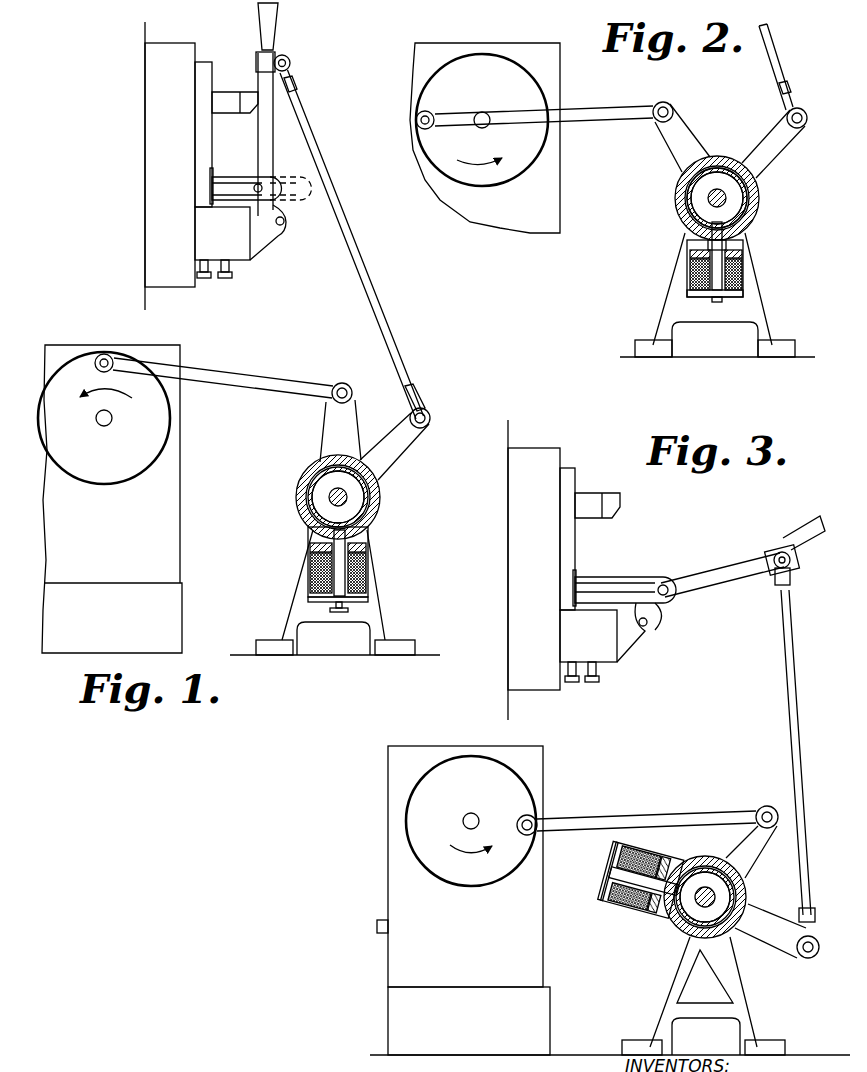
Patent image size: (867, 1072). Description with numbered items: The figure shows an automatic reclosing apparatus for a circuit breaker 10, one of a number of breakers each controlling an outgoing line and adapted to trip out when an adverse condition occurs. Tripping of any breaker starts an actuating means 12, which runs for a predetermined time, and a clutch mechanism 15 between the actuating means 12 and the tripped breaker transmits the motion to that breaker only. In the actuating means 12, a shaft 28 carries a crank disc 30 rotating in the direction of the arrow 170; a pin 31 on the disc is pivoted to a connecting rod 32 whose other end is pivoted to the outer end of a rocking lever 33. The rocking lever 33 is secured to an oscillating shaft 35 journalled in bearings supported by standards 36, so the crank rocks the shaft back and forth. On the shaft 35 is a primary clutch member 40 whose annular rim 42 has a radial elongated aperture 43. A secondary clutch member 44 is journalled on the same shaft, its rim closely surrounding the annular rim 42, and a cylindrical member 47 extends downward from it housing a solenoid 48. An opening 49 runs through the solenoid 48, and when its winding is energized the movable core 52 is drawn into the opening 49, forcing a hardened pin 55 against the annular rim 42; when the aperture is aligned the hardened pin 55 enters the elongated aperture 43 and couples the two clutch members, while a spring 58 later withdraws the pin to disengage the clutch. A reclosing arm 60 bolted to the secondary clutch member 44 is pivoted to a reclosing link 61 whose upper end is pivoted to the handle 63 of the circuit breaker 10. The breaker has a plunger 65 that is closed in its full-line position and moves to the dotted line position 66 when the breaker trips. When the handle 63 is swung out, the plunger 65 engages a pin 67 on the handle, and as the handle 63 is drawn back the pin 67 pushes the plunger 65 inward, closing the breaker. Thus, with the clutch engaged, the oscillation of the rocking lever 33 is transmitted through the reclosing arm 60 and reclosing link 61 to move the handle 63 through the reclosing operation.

In FIG. 1, the circuit breaker 10 is at (177, 273).
In FIG. 3, the circuit breaker 10 is at (549, 674).
In FIG. 1, the actuating means 12 is at (153, 512).
In FIG. 2, the actuating means 12 is at (538, 190).
In FIG. 3, the actuating means 12 is at (521, 948).
In FIG. 1, the clutch mechanism 15 is at (386, 492).
In FIG. 3, the clutch mechanism 15 is at (686, 851).
In FIG. 1, the shaft 28 is at (103, 428).
In FIG. 2, the shaft 28 is at (487, 126).
In FIG. 3, the shaft 28 is at (471, 812).
In FIG. 1, the crank disc 30 is at (108, 478).
In FIG. 2, the crank disc 30 is at (535, 88).
In FIG. 3, the crank disc 30 is at (456, 875).
In FIG. 1, the pin 31 is at (113, 356).
In FIG. 2, the pin 31 is at (415, 120).
In FIG. 3, the pin 31 is at (537, 816).
In FIG. 1, the connecting rod 32 is at (277, 382).
In FIG. 2, the connecting rod 32 is at (609, 108).
In FIG. 3, the connecting rod 32 is at (682, 814).
In FIG. 1, the rocking lever 33 is at (352, 415).
In FIG. 2, the rocking lever 33 is at (685, 128).
In FIG. 3, the rocking lever 33 is at (735, 838).
In FIG. 1, the oscillating shaft 35 is at (350, 501).
In FIG. 2, the oscillating shaft 35 is at (727, 200).
In FIG. 3, the oscillating shaft 35 is at (707, 910).
In FIG. 1, the standard 36 is at (378, 618).
In FIG. 2, the standard 36 is at (717, 295).
In FIG. 3, the standard 36 is at (752, 1024).
In FIG. 1, the primary clutch member 40 is at (318, 493).
In FIG. 2, the primary clutch member 40 is at (735, 194).
In FIG. 3, the primary clutch member 40 is at (722, 895).
In FIG. 2, the annular rim 42 is at (688, 197).
In FIG. 1, the elongated aperture 43 is at (322, 516).
In FIG. 2, the elongated aperture 43 is at (700, 224).
In FIG. 3, the elongated aperture 43 is at (660, 886).
In FIG. 1, the secondary clutch member 44 is at (299, 477).
In FIG. 2, the secondary clutch member 44 is at (675, 183).
In FIG. 3, the secondary clutch member 44 is at (675, 866).
In FIG. 1, the cylindrical member 47 is at (375, 568).
In FIG. 2, the cylindrical member 47 is at (736, 292).
In FIG. 1, the solenoid 48 is at (370, 580).
In FIG. 2, the solenoid 48 is at (736, 278).
In FIG. 3, the solenoid 48 is at (645, 952).
In FIG. 2, the opening 49 is at (695, 248).
In FIG. 1, the movable core 52 is at (320, 578).
In FIG. 2, the movable core 52 is at (732, 258).
In FIG. 3, the movable core 52 is at (612, 913).
In FIG. 1, the hardened pin 55 is at (336, 537).
In FIG. 2, the hardened pin 55 is at (726, 228).
In FIG. 1, the spring 58 is at (332, 600).
In FIG. 1, the reclosing arm 60 is at (404, 446).
In FIG. 2, the reclosing arm 60 is at (773, 131).
In FIG. 3, the reclosing arm 60 is at (781, 945).
In FIG. 1, the reclosing link 61 is at (396, 348).
In FIG. 2, the reclosing link 61 is at (788, 62).
In FIG. 3, the reclosing link 61 is at (793, 689).
In FIG. 1, the handle 63 is at (273, 152).
In FIG. 3, the handle 63 is at (722, 576).
In FIG. 1, the plunger 65 is at (238, 176).
In FIG. 3, the plunger 65 is at (630, 578).
In FIG. 1, the dotted line position 66 is at (305, 190).
In FIG. 3, the pin 67 is at (670, 580).
In FIG. 1, the arrow 170 is at (106, 390).